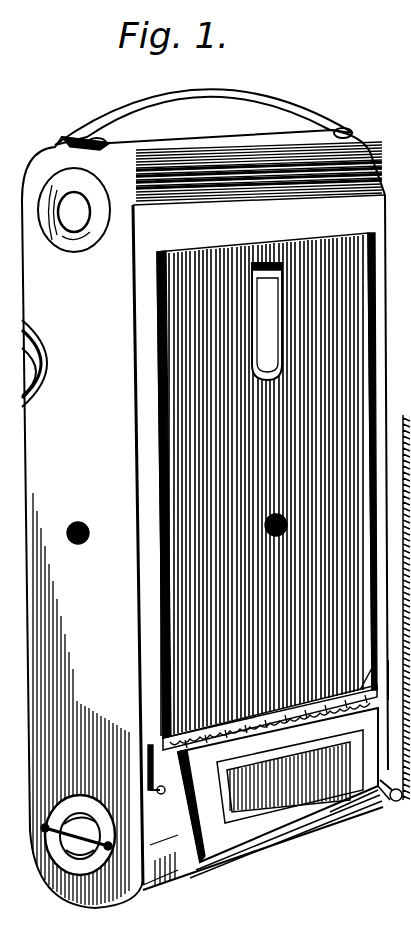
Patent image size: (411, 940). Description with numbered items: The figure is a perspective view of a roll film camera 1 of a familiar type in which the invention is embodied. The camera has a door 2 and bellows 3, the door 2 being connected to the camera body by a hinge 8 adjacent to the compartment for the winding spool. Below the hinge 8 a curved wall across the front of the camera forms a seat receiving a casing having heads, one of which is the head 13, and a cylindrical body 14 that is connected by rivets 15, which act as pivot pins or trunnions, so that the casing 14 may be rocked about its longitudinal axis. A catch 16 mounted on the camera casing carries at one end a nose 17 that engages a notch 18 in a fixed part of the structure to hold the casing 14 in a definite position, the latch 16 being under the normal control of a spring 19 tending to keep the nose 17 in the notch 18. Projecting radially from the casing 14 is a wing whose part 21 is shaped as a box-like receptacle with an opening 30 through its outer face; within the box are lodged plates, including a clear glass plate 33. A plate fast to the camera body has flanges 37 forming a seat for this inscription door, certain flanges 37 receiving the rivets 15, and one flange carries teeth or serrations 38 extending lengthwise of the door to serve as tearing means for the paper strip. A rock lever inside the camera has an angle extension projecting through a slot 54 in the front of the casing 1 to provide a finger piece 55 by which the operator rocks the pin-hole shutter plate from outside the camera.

The camera 1 is at (205, 498).
The door 2 is at (340, 333).
The head 13 is at (402, 607).
The hinge 8 is at (371, 668).
The bellows 3 is at (396, 680).
The teeth or serrations 38 is at (165, 720).
The slot 54 is at (148, 756).
The finger piece 55 is at (157, 790).
The flanges 37 is at (180, 815).
The rivets 15 is at (183, 850).
The cylindrical body 14 is at (290, 832).
The opening 30 is at (322, 812).
The plate 33 is at (262, 857).
The wing part 21 is at (238, 860).
The notch 18 is at (350, 828).
The nose 17 is at (384, 800).
The catch 16 is at (392, 805).
The spring 19 is at (388, 785).